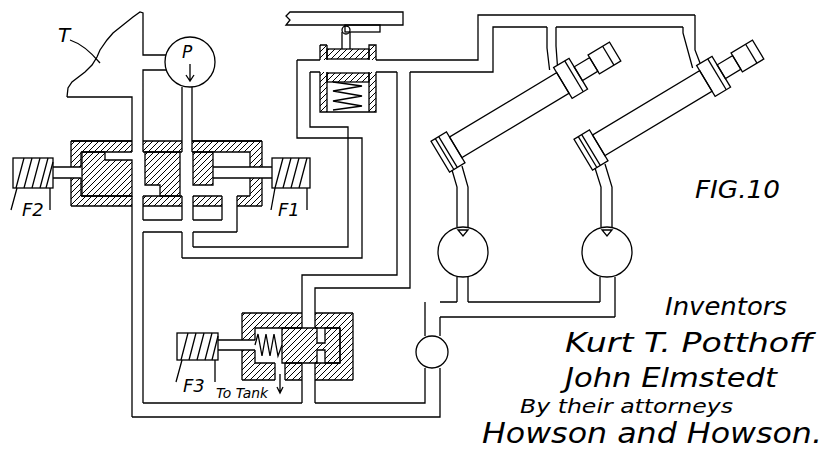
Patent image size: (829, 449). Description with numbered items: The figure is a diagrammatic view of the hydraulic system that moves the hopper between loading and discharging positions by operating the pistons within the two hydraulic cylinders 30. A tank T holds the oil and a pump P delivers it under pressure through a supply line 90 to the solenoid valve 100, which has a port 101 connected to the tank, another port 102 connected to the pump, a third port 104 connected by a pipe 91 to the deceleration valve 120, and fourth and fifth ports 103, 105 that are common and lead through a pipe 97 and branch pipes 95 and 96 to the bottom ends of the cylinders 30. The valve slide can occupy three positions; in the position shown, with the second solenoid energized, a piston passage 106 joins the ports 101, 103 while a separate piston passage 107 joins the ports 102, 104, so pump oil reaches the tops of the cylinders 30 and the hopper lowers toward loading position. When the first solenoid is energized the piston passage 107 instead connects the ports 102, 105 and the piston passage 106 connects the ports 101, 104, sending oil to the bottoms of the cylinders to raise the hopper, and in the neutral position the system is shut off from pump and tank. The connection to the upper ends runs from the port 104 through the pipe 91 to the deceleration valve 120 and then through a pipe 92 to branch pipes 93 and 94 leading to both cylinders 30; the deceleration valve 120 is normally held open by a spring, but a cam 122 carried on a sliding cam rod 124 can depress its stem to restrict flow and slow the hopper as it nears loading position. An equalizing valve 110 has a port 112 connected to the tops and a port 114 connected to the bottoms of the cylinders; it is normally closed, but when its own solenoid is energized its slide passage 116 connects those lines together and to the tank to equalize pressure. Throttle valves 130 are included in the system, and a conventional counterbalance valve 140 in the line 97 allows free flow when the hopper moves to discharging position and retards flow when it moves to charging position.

The hydraulic cylinders 30 is at (500, 140).
The pump supply conduit 90 is at (193, 118).
The pipe 91 is at (243, 260).
The pipe 92 is at (412, 60).
The branch pipe 93 is at (557, 43).
The branch pipe 94 is at (656, 27).
The branch pipe 95 is at (470, 205).
The branch pipe 96 is at (562, 302).
The pipe 97 is at (376, 418).
The solenoid valve 100 is at (72, 207).
The port 101 is at (135, 145).
The port 102 is at (190, 147).
The port 103 is at (137, 203).
The port 104 is at (187, 211).
The port 105 is at (230, 203).
The piston passage 106 is at (115, 143).
The piston passage 107 is at (203, 145).
The equalizing valve 110 is at (353, 316).
The port 112 is at (313, 318).
The port 114 is at (310, 377).
The piston or slide passage 116 is at (298, 328).
The deceleration valve 120 is at (320, 50).
The cam 122 is at (382, 30).
The cam rod 124 is at (285, 15).
The throttle valves 130 is at (583, 250).
The counterbalance valve 140 is at (450, 349).